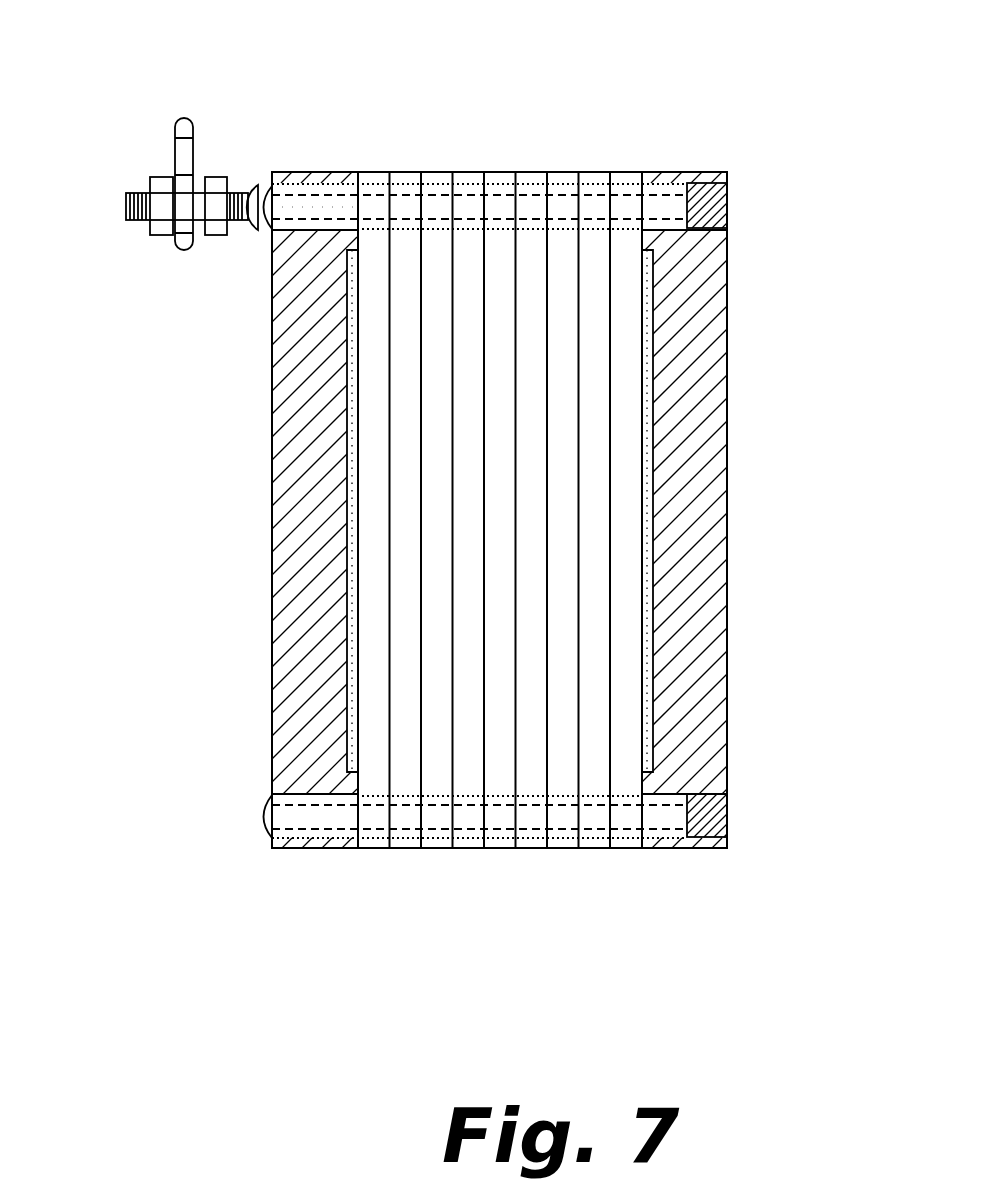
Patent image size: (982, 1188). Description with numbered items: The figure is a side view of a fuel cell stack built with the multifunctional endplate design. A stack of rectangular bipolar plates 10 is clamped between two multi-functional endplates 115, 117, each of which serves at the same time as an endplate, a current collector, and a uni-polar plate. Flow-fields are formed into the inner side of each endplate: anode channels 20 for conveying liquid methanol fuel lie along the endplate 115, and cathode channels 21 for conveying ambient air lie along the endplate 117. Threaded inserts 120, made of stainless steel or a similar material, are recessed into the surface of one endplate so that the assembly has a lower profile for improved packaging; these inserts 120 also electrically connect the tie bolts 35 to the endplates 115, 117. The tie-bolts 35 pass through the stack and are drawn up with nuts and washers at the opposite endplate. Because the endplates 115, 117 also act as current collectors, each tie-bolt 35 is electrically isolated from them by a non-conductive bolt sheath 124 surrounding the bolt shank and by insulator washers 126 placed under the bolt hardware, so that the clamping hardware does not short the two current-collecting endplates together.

The bipolar plate 10 is at (355, 172).
The multi-functional endplate 115 is at (270, 612).
The multi-functional endplate 117 is at (727, 565).
The flow-field anode channels 20 is at (350, 752).
The cathode channels 21 is at (650, 730).
The threaded inserts 120 is at (729, 185).
The tie-bolts 35 is at (125, 207).
The non-conductive bolt sheaths 124 is at (290, 223).
The insulator washers 126 is at (247, 190).